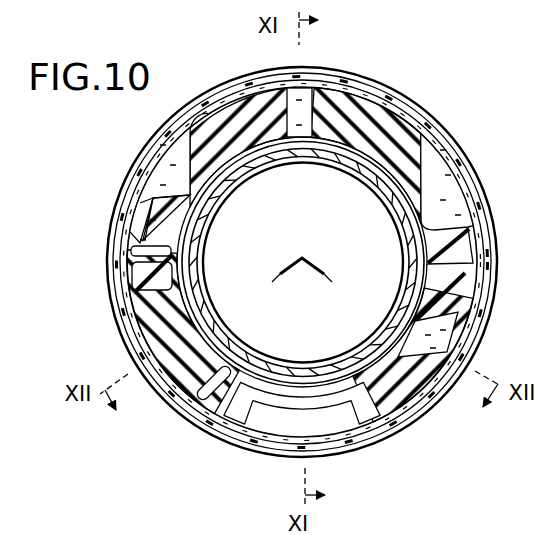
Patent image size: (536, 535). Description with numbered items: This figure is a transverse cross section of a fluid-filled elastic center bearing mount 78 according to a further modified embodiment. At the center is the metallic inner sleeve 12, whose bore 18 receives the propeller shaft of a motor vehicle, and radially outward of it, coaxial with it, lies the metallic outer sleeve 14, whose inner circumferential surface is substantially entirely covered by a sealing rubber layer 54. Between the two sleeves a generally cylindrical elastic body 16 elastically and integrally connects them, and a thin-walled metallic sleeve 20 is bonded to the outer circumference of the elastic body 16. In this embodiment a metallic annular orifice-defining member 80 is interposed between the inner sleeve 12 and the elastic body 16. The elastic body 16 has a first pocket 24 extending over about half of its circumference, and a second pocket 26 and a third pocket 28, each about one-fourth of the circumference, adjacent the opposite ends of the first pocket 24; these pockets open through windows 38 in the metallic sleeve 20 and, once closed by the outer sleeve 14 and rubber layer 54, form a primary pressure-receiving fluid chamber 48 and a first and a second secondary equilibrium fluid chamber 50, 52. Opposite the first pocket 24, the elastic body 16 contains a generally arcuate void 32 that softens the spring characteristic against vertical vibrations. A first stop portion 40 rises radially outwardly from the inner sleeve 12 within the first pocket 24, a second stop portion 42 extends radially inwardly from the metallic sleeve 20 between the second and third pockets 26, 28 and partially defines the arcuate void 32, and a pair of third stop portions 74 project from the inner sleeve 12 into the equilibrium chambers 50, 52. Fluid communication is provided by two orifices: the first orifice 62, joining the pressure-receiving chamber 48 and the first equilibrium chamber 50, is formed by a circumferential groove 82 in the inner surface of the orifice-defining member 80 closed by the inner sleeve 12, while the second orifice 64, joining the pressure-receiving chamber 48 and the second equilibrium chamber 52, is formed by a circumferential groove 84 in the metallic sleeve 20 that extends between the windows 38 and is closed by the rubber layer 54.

The inner sleeve 12 is at (301, 152).
The outer sleeve 14 is at (218, 88).
The elastic body 16 is at (193, 229).
The bore 18 is at (289, 365).
The metallic sleeve 20 is at (378, 428).
The first pocket 24 is at (468, 227).
The second pocket 26 is at (473, 268).
The third pocket 28 is at (177, 401).
The arcuate void 32 is at (371, 431).
The windows 38 is at (481, 217).
The first stop portion 40 is at (401, 135).
The second stop portion 42 is at (293, 432).
The primary fluid chamber 48 is at (333, 87).
The first secondary fluid chamber 50 is at (461, 340).
The second secondary fluid chamber 52 is at (130, 300).
The sealing rubber layer 54 is at (448, 132).
The first orifice 62 is at (378, 172).
The second orifice 64 is at (138, 202).
The third stop portions 74 is at (150, 308).
The center bearing mount 78 is at (427, 52).
The annular orifice-defining member 80 is at (197, 318).
The circumferential groove 82 is at (407, 237).
The circumferential groove 84 is at (143, 218).